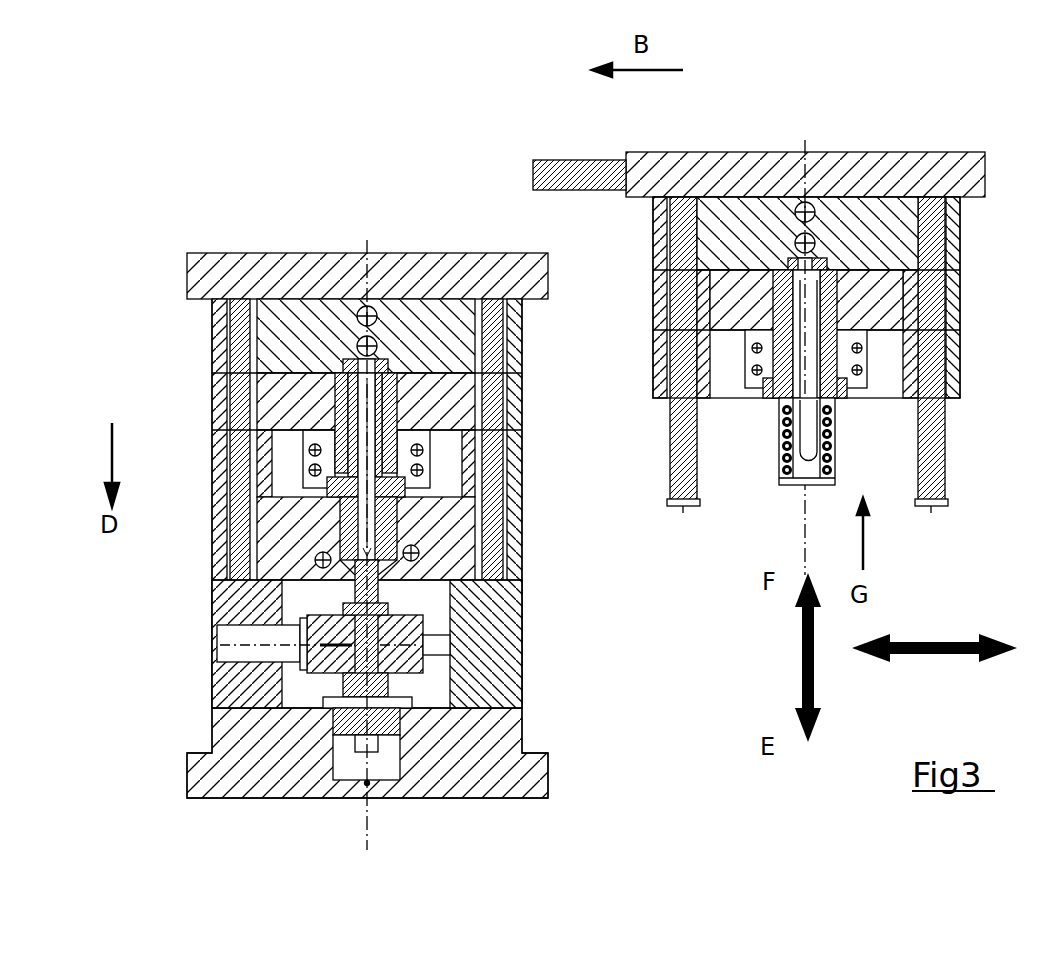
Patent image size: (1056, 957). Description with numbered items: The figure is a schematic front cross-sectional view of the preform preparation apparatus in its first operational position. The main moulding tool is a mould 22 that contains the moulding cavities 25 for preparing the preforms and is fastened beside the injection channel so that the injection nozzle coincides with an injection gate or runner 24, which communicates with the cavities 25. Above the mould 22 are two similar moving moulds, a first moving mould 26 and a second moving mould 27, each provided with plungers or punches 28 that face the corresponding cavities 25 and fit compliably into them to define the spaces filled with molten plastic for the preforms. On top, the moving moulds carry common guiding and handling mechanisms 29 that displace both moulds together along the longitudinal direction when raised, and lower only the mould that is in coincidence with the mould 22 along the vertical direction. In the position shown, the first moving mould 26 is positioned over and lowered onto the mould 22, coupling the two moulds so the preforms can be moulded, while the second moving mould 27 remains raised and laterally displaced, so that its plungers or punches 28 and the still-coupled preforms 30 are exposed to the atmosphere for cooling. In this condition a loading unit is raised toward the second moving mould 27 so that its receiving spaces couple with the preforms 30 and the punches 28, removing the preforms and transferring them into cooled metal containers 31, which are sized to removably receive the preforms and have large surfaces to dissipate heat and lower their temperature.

The mould 22 is at (187, 772).
The injection gate or runner 24 is at (227, 645).
The moulding cavities 25 is at (383, 527).
The first moving mould 26 is at (367, 276).
The second moving mould 27 is at (805, 174).
The plungers or punches 28 is at (847, 378).
The guiding and handling mechanisms 29 is at (597, 173).
The preforms 30 is at (792, 446).
The cooled metal containers 31 is at (798, 477).